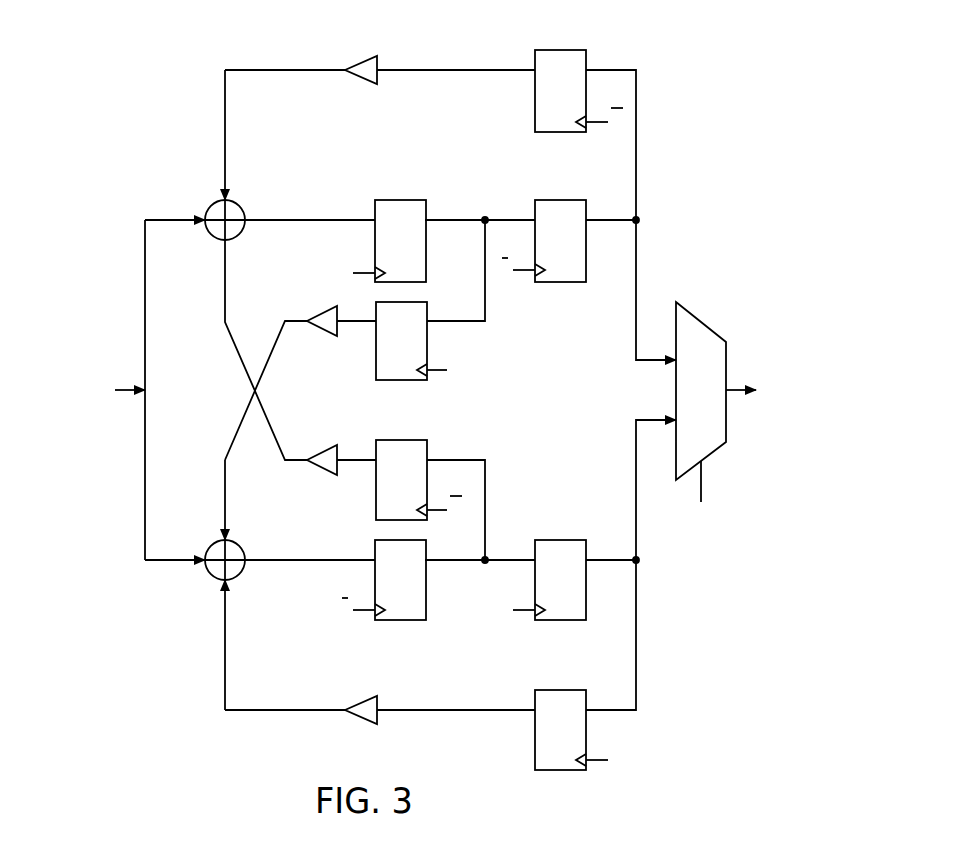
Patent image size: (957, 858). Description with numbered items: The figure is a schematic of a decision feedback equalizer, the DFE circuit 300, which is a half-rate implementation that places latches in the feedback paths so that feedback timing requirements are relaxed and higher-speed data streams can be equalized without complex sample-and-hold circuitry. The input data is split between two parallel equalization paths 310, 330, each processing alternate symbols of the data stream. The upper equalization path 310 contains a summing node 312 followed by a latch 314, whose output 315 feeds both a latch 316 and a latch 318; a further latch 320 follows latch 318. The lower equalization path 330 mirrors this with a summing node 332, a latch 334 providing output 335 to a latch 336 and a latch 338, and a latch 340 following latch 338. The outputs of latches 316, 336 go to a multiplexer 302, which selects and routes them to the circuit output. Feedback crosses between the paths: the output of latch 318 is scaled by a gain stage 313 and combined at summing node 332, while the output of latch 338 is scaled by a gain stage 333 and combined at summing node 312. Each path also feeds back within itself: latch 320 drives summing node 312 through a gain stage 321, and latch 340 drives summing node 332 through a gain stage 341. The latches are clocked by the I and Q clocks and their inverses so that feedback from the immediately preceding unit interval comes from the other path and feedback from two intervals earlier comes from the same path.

The DFE circuit 300 is at (727, 130).
The multiplexer 302 is at (711, 324).
The equalization path 310 is at (459, 52).
The summing node 312 is at (211, 206).
The gain stage 313 is at (323, 309).
The latch 314 is at (400, 200).
The output 315 is at (485, 300).
The latch 316 is at (560, 200).
The latch 318 is at (376, 350).
The latch 320 is at (560, 50).
The gain stage 321 is at (362, 61).
The equalization path 330 is at (202, 675).
The summing node 332 is at (213, 576).
The gain stage 333 is at (323, 449).
The latch 334 is at (400, 620).
The output 335 is at (485, 505).
The latch 336 is at (560, 620).
The latch 338 is at (376, 490).
The latch 340 is at (560, 770).
The gain stage 341 is at (362, 720).